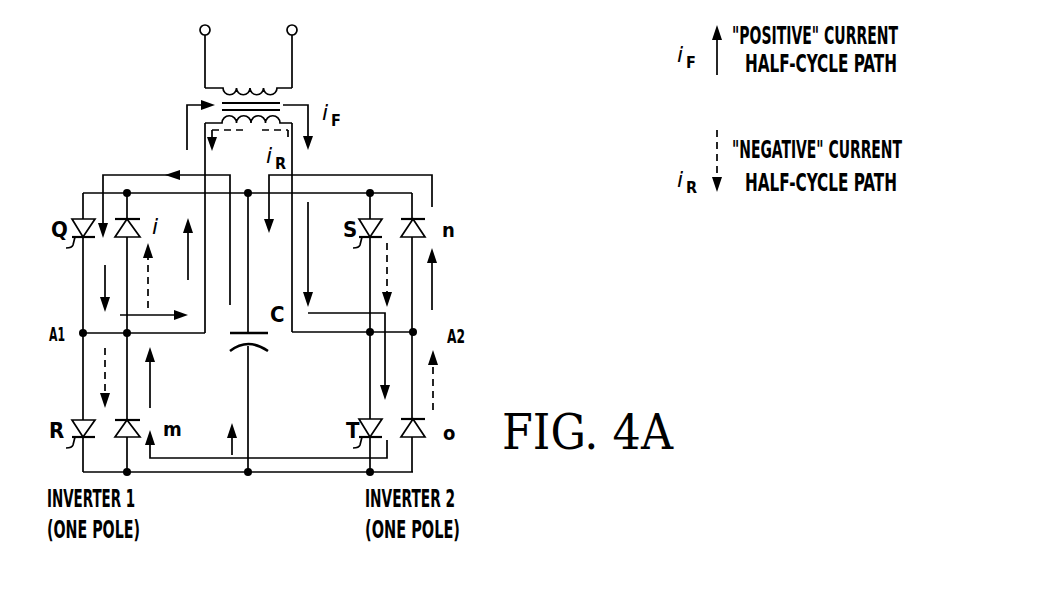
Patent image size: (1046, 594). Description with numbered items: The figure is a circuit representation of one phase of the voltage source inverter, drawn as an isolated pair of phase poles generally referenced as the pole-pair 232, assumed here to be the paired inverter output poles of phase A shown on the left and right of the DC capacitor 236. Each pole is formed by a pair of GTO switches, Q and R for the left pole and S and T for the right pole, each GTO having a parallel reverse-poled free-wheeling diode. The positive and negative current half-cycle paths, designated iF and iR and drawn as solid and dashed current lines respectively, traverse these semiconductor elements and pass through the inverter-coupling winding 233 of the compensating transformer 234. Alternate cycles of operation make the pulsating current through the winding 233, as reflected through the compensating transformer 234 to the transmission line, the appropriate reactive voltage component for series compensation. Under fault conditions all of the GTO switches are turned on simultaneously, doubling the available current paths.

The isolated pole-pair 232 is at (412, 149).
The inverter-coupling winding 233 is at (253, 123).
The compensating transformer 234 is at (239, 88).
The DC capacitor 236 is at (265, 345).